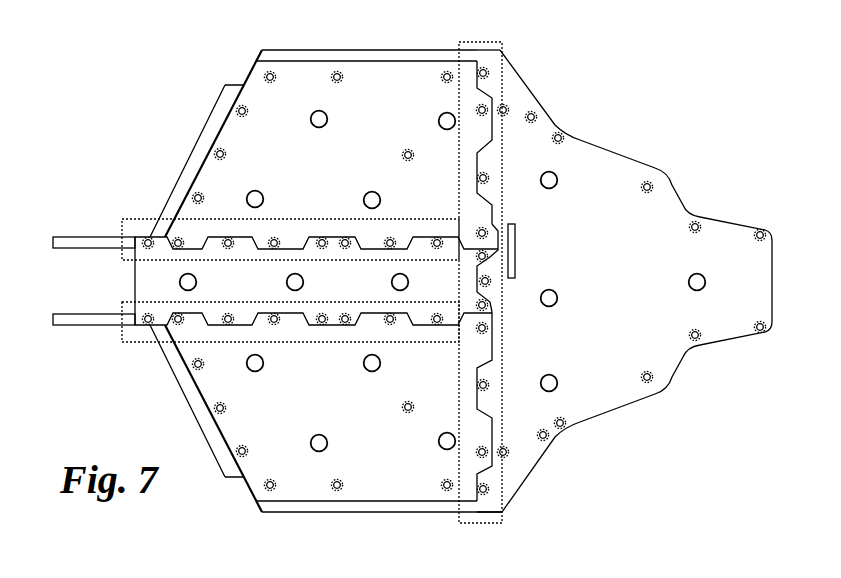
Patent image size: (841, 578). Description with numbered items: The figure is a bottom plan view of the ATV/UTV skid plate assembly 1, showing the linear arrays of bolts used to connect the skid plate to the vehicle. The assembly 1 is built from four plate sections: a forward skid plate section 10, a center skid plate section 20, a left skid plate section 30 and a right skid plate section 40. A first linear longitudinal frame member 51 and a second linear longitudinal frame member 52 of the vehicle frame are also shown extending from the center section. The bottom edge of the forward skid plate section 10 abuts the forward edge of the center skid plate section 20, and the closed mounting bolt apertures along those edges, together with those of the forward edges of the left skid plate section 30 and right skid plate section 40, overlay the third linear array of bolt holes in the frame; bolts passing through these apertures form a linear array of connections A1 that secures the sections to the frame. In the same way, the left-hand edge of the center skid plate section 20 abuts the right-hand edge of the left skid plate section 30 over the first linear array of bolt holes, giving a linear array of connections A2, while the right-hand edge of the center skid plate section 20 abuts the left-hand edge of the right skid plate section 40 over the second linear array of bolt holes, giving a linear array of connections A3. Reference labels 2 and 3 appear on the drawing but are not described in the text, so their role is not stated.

The assembly 1 is at (653, 118).
The lower frame portion 2 is at (693, 393).
The plate assembly 3 is at (298, 289).
The forward skid plate section 10 is at (757, 288).
The center skid plate section 20 is at (153, 288).
The left skid plate section 30 is at (375, 88).
The right skid plate section 40 is at (373, 488).
The first linear longitudinal frame member 51 is at (92, 243).
The second linear longitudinal frame member 52 is at (92, 320).
The linear array of connections A1 is at (500, 477).
The linear array of connections A2 is at (152, 220).
The linear array of connections A3 is at (130, 345).